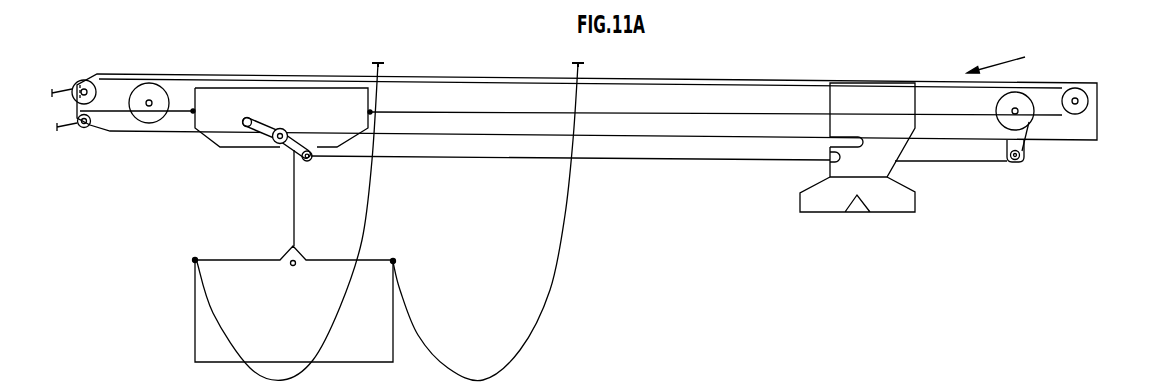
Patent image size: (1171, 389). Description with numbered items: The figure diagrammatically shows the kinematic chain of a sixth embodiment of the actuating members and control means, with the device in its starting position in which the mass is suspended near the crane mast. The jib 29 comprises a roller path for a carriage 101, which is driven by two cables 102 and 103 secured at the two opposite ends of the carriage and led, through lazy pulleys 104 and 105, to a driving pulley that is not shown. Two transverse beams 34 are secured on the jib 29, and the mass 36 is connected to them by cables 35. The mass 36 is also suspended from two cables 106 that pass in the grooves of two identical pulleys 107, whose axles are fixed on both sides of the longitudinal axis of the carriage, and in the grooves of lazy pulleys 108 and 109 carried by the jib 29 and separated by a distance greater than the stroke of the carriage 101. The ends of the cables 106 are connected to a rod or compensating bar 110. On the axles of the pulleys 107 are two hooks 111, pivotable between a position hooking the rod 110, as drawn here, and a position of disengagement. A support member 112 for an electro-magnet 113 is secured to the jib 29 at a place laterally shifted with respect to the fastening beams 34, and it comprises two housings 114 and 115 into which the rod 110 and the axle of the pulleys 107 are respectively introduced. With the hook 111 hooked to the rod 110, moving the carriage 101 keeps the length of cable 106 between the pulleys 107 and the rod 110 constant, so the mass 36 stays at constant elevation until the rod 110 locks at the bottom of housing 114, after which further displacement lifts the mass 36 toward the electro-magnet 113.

The jib 29 is at (1008, 59).
The transverse beams 34 is at (578, 64).
The cables 35 is at (367, 208).
The mass 36 is at (193, 318).
The carriage 101 is at (273, 100).
The cable 102 is at (59, 130).
The cable 103 is at (765, 113).
The lazy pulley 104 is at (75, 85).
The lazy pulley 105 is at (1085, 96).
The cables 106 is at (290, 207).
The pulleys 107 is at (283, 128).
The lazy pulley 108 is at (148, 92).
The lazy pulley 109 is at (1022, 157).
The compensating bar 110 is at (310, 162).
The hook 111 is at (250, 130).
The support member 112 is at (860, 102).
The electro-magnet 113 is at (845, 200).
The housing 114 is at (828, 160).
The housing 115 is at (833, 147).